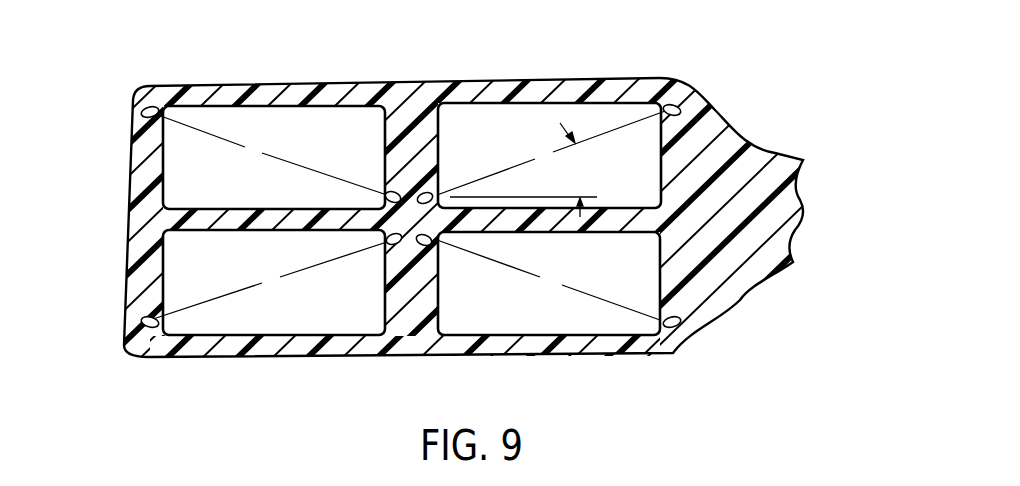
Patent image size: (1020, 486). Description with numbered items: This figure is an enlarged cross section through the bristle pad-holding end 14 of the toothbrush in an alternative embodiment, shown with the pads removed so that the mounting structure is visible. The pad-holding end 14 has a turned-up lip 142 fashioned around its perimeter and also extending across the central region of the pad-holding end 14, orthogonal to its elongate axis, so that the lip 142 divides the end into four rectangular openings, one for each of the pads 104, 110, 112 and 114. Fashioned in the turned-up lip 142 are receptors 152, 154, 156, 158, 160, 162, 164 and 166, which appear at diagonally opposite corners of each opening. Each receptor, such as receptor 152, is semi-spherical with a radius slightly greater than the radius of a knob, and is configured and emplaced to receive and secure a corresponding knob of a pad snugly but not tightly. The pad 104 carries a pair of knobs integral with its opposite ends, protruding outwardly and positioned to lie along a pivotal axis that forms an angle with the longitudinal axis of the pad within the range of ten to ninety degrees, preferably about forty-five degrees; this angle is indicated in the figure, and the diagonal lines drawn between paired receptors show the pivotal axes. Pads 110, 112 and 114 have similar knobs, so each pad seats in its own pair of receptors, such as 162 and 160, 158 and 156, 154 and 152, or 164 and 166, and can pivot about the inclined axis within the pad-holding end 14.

The pad-holding end 14 is at (413, 80).
The turned-up lip 142 is at (528, 88).
The pad 112 is at (263, 127).
The pad 110 is at (580, 117).
The pad 114 is at (273, 317).
The pad 104 is at (537, 315).
The receptor 162 is at (147, 113).
The receptor 160 is at (385, 193).
The receptor 158 is at (437, 193).
The receptor 156 is at (688, 107).
The receptor 154 is at (440, 242).
The receptor 152 is at (680, 320).
The receptor 164 is at (385, 233).
The receptor 166 is at (160, 318).